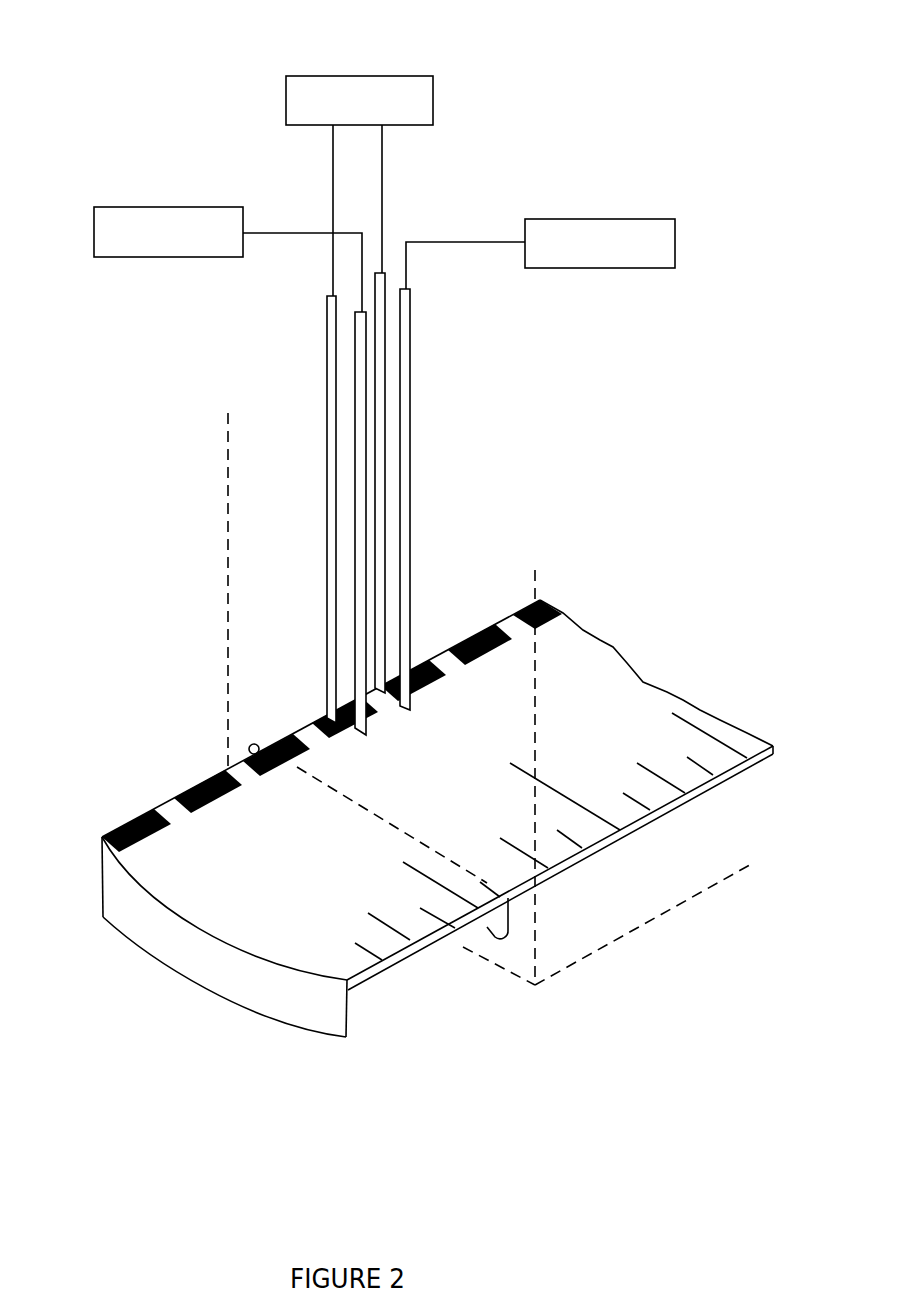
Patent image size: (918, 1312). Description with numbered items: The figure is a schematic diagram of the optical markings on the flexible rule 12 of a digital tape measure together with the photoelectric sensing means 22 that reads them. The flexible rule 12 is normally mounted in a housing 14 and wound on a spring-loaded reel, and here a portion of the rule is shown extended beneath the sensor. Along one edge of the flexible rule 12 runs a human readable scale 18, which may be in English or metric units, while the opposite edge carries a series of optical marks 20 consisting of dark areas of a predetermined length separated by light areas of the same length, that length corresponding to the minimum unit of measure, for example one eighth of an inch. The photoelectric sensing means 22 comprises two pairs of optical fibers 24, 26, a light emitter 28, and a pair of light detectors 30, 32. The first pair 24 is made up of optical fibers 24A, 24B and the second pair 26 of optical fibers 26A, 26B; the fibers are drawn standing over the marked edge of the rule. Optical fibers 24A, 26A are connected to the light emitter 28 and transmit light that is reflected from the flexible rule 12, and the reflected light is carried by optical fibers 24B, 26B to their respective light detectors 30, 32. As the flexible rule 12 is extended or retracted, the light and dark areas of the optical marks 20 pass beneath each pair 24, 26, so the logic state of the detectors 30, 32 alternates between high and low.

The flexible rule 12 is at (595, 700).
The housing 14 is at (227, 595).
The human readable scale 18 is at (380, 920).
The optical marks 20 is at (130, 820).
The photoelectric sensing means 22 is at (476, 504).
The first optical fiber pair 24 is at (294, 515).
The optical fiber 24A is at (328, 497).
The optical fiber 24B is at (357, 562).
The second optical fiber pair 26 is at (466, 491).
The optical fiber 26A is at (380, 496).
The optical fiber 26B is at (406, 557).
The light emitter 28 is at (358, 85).
The light detector 30 is at (165, 215).
The light detector 32 is at (598, 230).